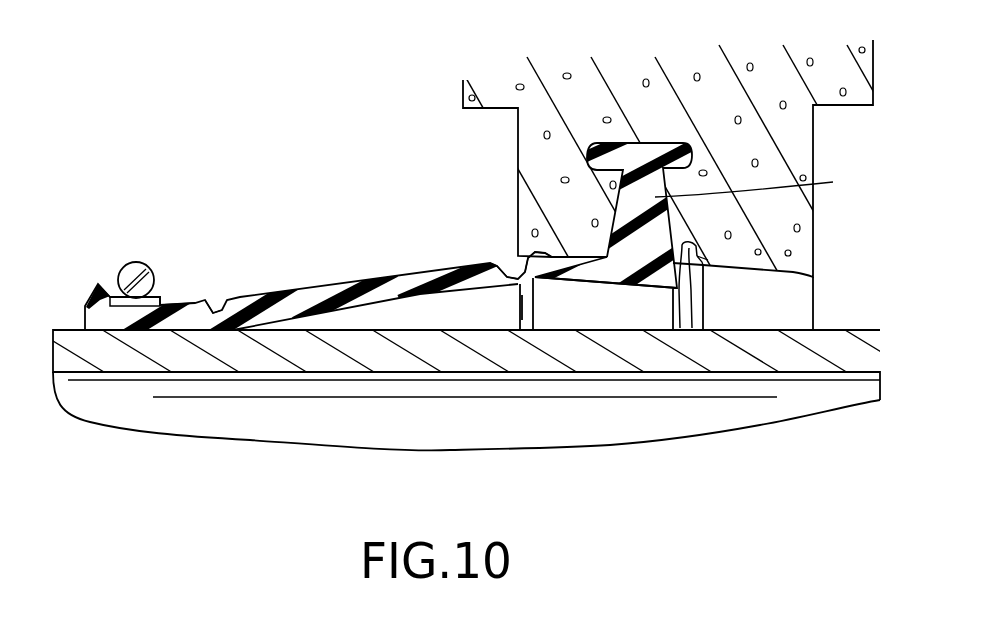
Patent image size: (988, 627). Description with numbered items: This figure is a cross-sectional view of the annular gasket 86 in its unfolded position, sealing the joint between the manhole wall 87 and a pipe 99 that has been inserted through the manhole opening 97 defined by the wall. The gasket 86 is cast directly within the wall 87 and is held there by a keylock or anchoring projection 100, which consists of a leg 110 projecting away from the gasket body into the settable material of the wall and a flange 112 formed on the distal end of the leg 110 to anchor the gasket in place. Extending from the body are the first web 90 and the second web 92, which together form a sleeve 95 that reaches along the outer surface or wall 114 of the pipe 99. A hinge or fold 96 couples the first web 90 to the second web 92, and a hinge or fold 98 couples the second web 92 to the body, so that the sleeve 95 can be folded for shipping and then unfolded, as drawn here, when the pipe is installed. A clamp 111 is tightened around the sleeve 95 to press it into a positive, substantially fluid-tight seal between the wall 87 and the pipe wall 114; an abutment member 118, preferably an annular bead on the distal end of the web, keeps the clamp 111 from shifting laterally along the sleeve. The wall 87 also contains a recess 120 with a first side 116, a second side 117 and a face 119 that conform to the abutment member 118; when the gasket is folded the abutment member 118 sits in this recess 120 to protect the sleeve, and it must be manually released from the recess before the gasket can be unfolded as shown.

The annular gasket 86 is at (506, 240).
The manhole wall 87 is at (797, 167).
The first web 90 is at (184, 318).
The second web 92 is at (325, 292).
The sleeve 95 is at (240, 318).
The hinge or fold 96 is at (215, 308).
The manhole opening 97 is at (786, 307).
The hinge or fold 98 is at (512, 278).
The pipe 99 is at (83, 347).
The keylock or anchoring projection 100 is at (680, 226).
The leg 110 is at (763, 179).
The clamp 111 is at (130, 263).
The flange 112 is at (647, 150).
The outer surface or wall of pipe 114 is at (272, 325).
The first side of recess 116 is at (680, 328).
The second side of recess 117 is at (703, 265).
The abutment member 118 is at (95, 287).
The face of recess 119 is at (708, 260).
The recess 120 is at (692, 328).